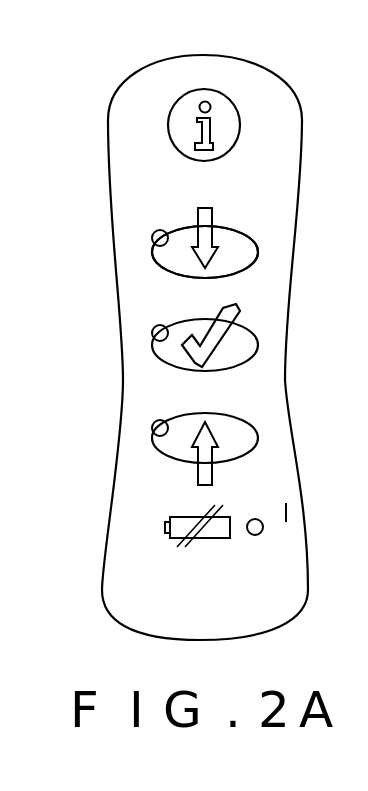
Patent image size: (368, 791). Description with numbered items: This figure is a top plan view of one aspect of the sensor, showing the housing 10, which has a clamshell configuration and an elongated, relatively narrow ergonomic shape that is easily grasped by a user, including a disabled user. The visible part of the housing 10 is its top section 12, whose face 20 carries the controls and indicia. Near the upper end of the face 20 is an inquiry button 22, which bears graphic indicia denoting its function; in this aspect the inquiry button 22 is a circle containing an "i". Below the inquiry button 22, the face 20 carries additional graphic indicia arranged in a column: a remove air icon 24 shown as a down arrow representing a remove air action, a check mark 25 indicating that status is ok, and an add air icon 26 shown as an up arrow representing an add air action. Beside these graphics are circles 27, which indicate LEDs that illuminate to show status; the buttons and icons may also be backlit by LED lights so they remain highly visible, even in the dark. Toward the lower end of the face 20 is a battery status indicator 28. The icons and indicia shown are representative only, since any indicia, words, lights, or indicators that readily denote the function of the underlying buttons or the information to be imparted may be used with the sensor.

The housing 10 is at (247, 48).
The top section 12 is at (287, 511).
The face 20 is at (262, 263).
The inquiry button 22 is at (187, 127).
The remove air icon 24 is at (172, 258).
The check mark 25 is at (257, 343).
The add air icon 26 is at (155, 443).
The circles 27 is at (152, 236).
The battery status indicator 28 is at (165, 530).